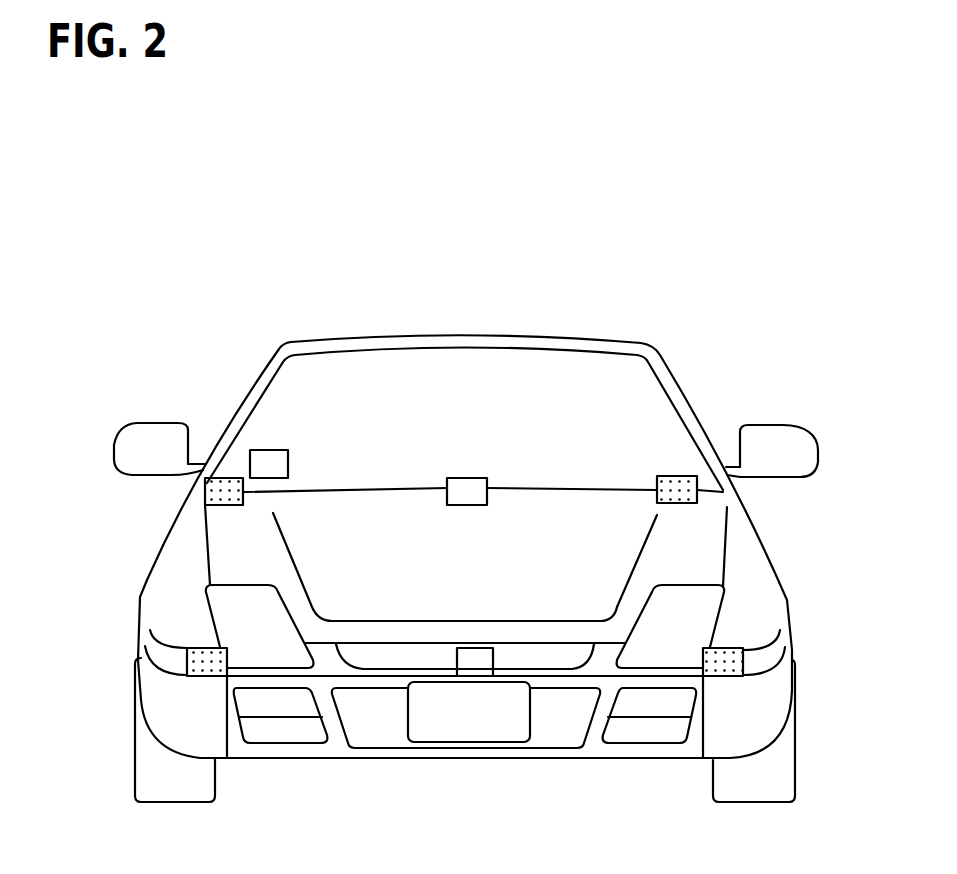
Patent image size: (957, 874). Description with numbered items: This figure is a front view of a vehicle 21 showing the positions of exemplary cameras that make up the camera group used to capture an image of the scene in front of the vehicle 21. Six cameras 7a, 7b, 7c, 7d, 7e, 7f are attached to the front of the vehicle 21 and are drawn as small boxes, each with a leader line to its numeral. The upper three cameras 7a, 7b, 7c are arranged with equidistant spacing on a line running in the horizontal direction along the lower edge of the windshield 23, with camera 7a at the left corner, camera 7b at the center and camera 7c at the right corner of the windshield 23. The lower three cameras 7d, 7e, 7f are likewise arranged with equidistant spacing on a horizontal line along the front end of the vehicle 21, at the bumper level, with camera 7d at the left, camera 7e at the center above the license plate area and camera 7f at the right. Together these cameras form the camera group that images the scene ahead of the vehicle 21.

The camera 7a is at (223, 505).
The camera 7b is at (467, 505).
The camera 7c is at (677, 503).
The camera 7d is at (208, 676).
The camera 7e is at (477, 662).
The camera 7f is at (730, 676).
The vehicle 21 is at (690, 402).
The windshield 23 is at (533, 377).